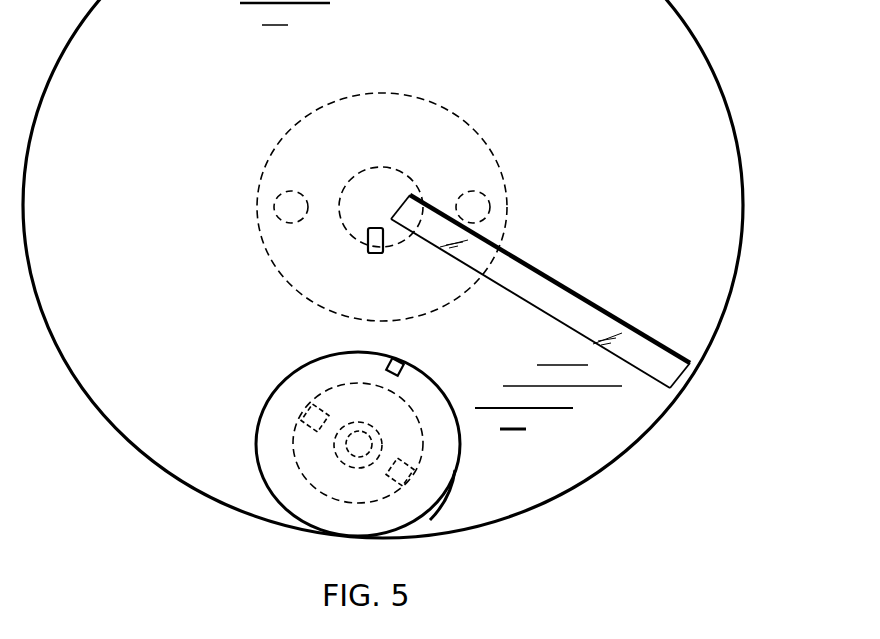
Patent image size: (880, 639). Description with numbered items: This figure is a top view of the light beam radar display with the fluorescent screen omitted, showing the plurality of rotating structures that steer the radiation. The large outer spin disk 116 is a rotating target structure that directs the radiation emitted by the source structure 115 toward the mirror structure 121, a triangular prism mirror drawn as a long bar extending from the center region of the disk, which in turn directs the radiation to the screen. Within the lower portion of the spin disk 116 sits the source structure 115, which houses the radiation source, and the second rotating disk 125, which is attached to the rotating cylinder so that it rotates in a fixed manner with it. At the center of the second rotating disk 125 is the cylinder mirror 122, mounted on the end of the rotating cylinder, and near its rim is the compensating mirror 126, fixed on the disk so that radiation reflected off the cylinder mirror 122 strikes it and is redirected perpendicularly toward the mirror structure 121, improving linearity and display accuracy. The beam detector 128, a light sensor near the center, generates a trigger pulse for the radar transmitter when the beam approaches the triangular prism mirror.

The spin disk 116 is at (741, 168).
The mirror structure 121 is at (578, 315).
The beam detector 128 is at (373, 253).
The second rotating disk 125 is at (458, 457).
The cylinder mirror 122 is at (363, 440).
The compensating mirror 126 is at (404, 362).
The source structure 115 is at (418, 519).